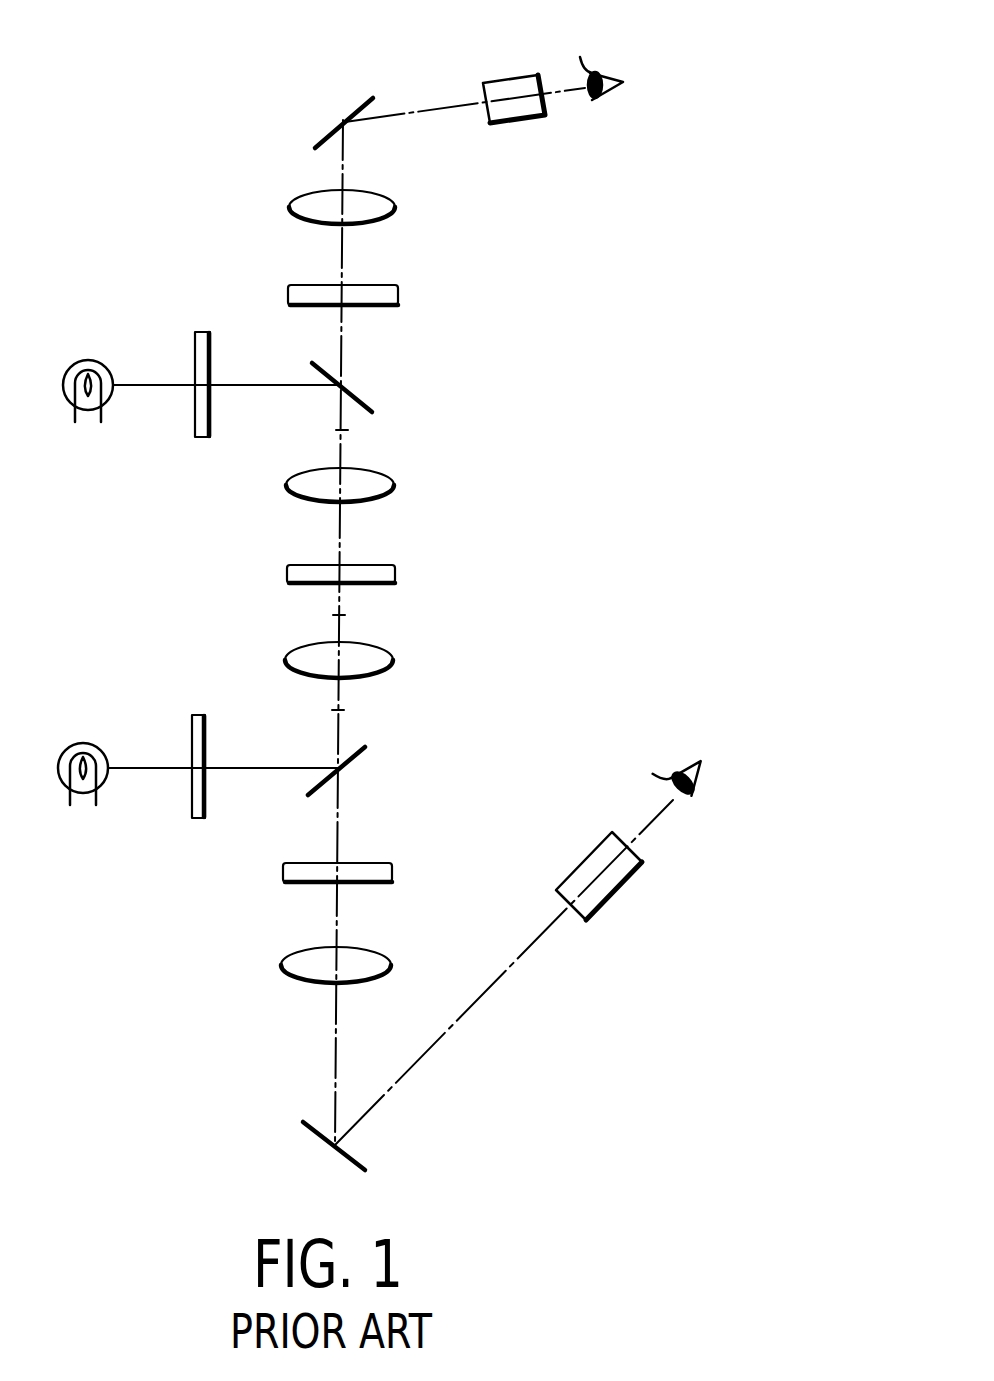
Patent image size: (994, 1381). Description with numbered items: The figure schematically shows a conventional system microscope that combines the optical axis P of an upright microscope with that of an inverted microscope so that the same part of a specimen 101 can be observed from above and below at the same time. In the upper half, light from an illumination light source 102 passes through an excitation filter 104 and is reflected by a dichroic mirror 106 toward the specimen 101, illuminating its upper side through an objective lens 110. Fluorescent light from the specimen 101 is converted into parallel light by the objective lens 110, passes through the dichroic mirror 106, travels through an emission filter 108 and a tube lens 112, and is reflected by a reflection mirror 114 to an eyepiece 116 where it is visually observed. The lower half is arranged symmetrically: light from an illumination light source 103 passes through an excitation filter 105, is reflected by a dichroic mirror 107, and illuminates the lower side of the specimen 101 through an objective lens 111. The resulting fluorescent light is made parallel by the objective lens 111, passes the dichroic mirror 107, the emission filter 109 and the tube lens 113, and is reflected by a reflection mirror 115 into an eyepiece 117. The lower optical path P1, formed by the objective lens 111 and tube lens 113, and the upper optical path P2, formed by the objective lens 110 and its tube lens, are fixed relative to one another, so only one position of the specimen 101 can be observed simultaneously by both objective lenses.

The specimen 101 is at (396, 574).
The illumination light source 102 is at (85, 360).
The illumination light source 103 is at (83, 743).
The excitation filter 104 is at (198, 330).
The excitation filter 105 is at (193, 713).
The dichroic mirror 106 is at (366, 396).
The dichroic mirror 107 is at (356, 758).
The emission filter 108 is at (399, 295).
The emission filter 109 is at (393, 872).
The objective lens 110 is at (395, 485).
The objective lens 111 is at (394, 660).
The tube lens 112 is at (396, 207).
The tube lens 113 is at (391, 962).
The reflection mirror 114 is at (358, 110).
The reflection mirror 115 is at (350, 1158).
The eyepiece 116 is at (510, 77).
The eyepiece 117 is at (622, 893).
The optical axis P is at (340, 615).
The lower optical path P1 is at (338, 710).
The upper optical path P2 is at (343, 430).